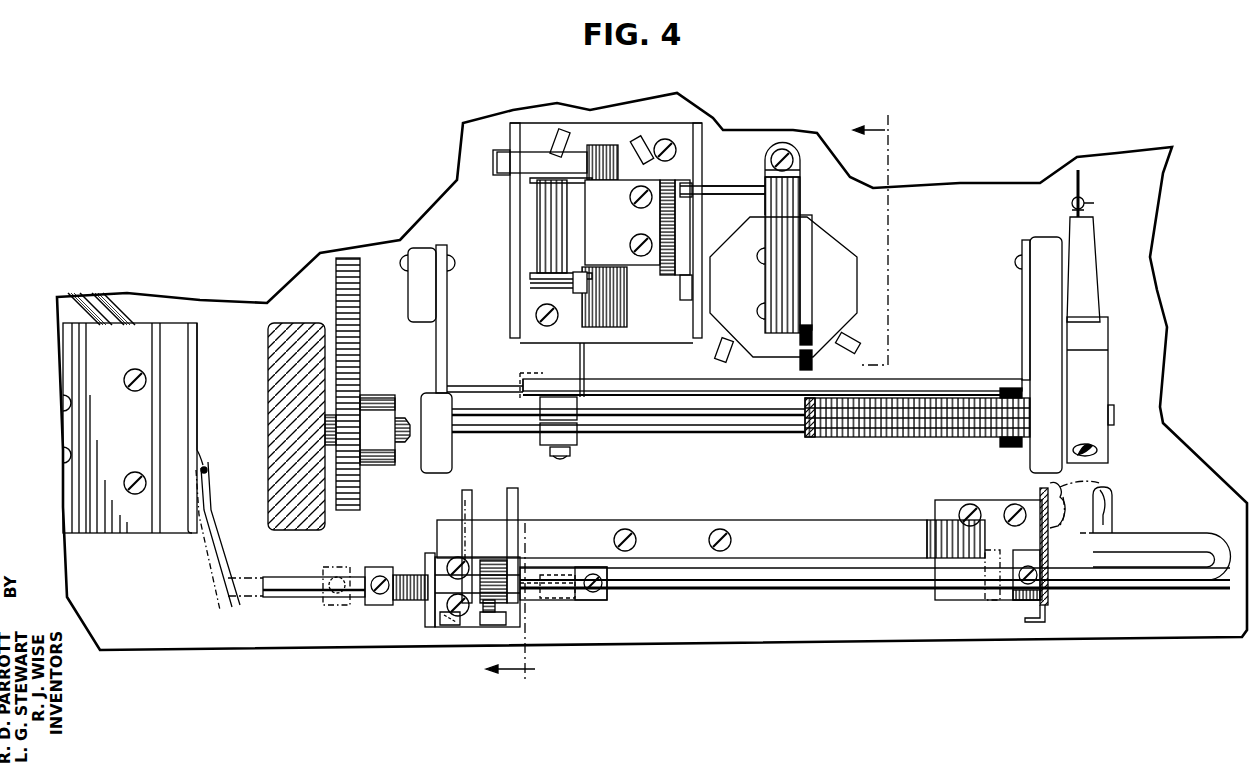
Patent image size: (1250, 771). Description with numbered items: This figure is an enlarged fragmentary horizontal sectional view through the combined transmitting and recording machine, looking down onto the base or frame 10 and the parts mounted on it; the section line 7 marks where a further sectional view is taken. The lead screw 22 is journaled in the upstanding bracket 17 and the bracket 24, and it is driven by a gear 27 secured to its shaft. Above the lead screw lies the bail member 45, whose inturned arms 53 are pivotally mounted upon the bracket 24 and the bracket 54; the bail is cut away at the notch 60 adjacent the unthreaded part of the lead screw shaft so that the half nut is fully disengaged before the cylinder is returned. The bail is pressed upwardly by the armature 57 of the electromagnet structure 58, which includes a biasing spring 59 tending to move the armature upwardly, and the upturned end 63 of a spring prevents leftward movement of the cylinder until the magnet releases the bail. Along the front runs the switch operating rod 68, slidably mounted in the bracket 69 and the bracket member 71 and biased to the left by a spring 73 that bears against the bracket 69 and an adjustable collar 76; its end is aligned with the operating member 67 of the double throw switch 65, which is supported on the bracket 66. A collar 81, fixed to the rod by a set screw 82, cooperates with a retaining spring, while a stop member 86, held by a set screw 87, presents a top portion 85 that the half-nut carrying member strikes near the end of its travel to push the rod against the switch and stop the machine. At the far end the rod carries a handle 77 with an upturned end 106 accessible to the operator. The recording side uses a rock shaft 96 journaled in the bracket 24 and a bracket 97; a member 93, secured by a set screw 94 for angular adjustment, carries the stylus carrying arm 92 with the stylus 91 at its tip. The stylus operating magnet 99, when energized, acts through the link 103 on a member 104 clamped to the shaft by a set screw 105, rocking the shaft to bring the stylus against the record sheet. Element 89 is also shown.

The section line 7- 7 is at (695, 399).
The base or frame 10 is at (833, 632).
The bracket 17 is at (283, 323).
The lead screw 22 is at (868, 440).
The bracket 24 is at (1046, 240).
The gear 27 is at (362, 345).
The bail member 45 is at (930, 378).
The inturned arms 53 is at (447, 338).
The bracket 54 is at (408, 308).
The armature 57 is at (810, 294).
The electromagnet structure 58 is at (832, 237).
The biasing spring 59 is at (797, 144).
The notch or depression 60 is at (475, 390).
The upturned end of spring 63 is at (992, 503).
The double throw switch 65 is at (178, 538).
The bracket 66 is at (128, 538).
The operating member 67 is at (218, 571).
The switch operating rod 68 is at (243, 597).
The bracket 69 is at (425, 617).
The bracket member 71 is at (1048, 605).
The spring 73 is at (410, 572).
The adjustable collar 76 is at (327, 607).
The handle 77 is at (1228, 583).
The collar 81 is at (563, 600).
The set screw 82 is at (605, 603).
The top portion of stop member 85 is at (516, 490).
The stop member 86 is at (495, 560).
The set screw 87 is at (480, 629).
The plate 89 is at (668, 520).
The stylus 91 is at (1090, 193).
The stylus carrying arm 92 is at (1085, 261).
The member 93 is at (1097, 368).
The set screw 94 is at (1097, 452).
The rock shaft 96 is at (690, 432).
The bracket 97 is at (430, 468).
The stylus operating magnet 99 is at (537, 227).
The link 103 is at (585, 367).
The member 104 is at (545, 440).
The set screw 105 is at (572, 452).
The upturned end 106 is at (1108, 485).